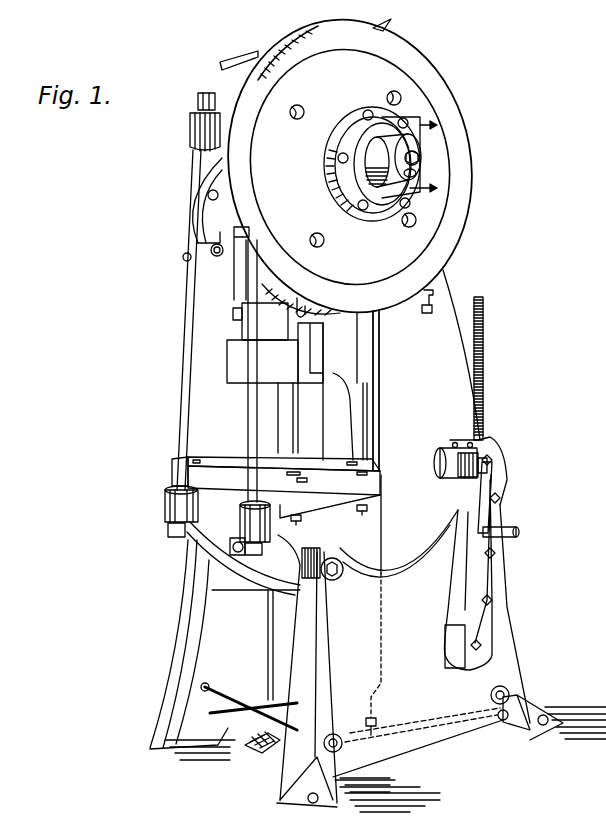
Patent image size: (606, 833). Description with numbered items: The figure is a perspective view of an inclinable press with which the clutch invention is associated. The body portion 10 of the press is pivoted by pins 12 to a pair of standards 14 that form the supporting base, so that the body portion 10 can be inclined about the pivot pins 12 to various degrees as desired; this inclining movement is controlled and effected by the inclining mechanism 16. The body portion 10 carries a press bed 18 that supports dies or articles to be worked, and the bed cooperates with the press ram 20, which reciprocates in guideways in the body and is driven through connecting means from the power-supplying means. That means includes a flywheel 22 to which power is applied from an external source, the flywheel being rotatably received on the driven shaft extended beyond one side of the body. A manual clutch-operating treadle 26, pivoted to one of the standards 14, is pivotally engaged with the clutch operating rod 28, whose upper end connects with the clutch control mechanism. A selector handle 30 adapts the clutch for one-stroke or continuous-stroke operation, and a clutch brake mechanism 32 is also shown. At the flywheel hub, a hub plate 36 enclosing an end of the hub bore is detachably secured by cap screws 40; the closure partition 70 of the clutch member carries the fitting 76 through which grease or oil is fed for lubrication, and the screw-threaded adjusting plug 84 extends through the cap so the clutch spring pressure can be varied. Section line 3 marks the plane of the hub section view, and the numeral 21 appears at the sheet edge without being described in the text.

The body portion 10 is at (443, 313).
The pins 12 is at (235, 553).
The standards 14 is at (215, 655).
The inclining mechanism 16 is at (519, 446).
The press bed 18 is at (322, 505).
The press ram 20 is at (275, 378).
The truncated numeral 21 is at (499, 827).
The flywheel 22 is at (440, 92).
The treadle 26 is at (277, 747).
The clutch operating rod 28 is at (377, 382).
The selector handle 30 is at (320, 300).
The clutch brake mechanism 32 is at (208, 236).
The hub plate 36 is at (348, 184).
The cap screws 40 is at (340, 162).
The closure partition 70 is at (372, 125).
The fitting 76 is at (419, 158).
The adjusting plug 84 is at (416, 173).
The section line 3- 3 is at (416, 165).